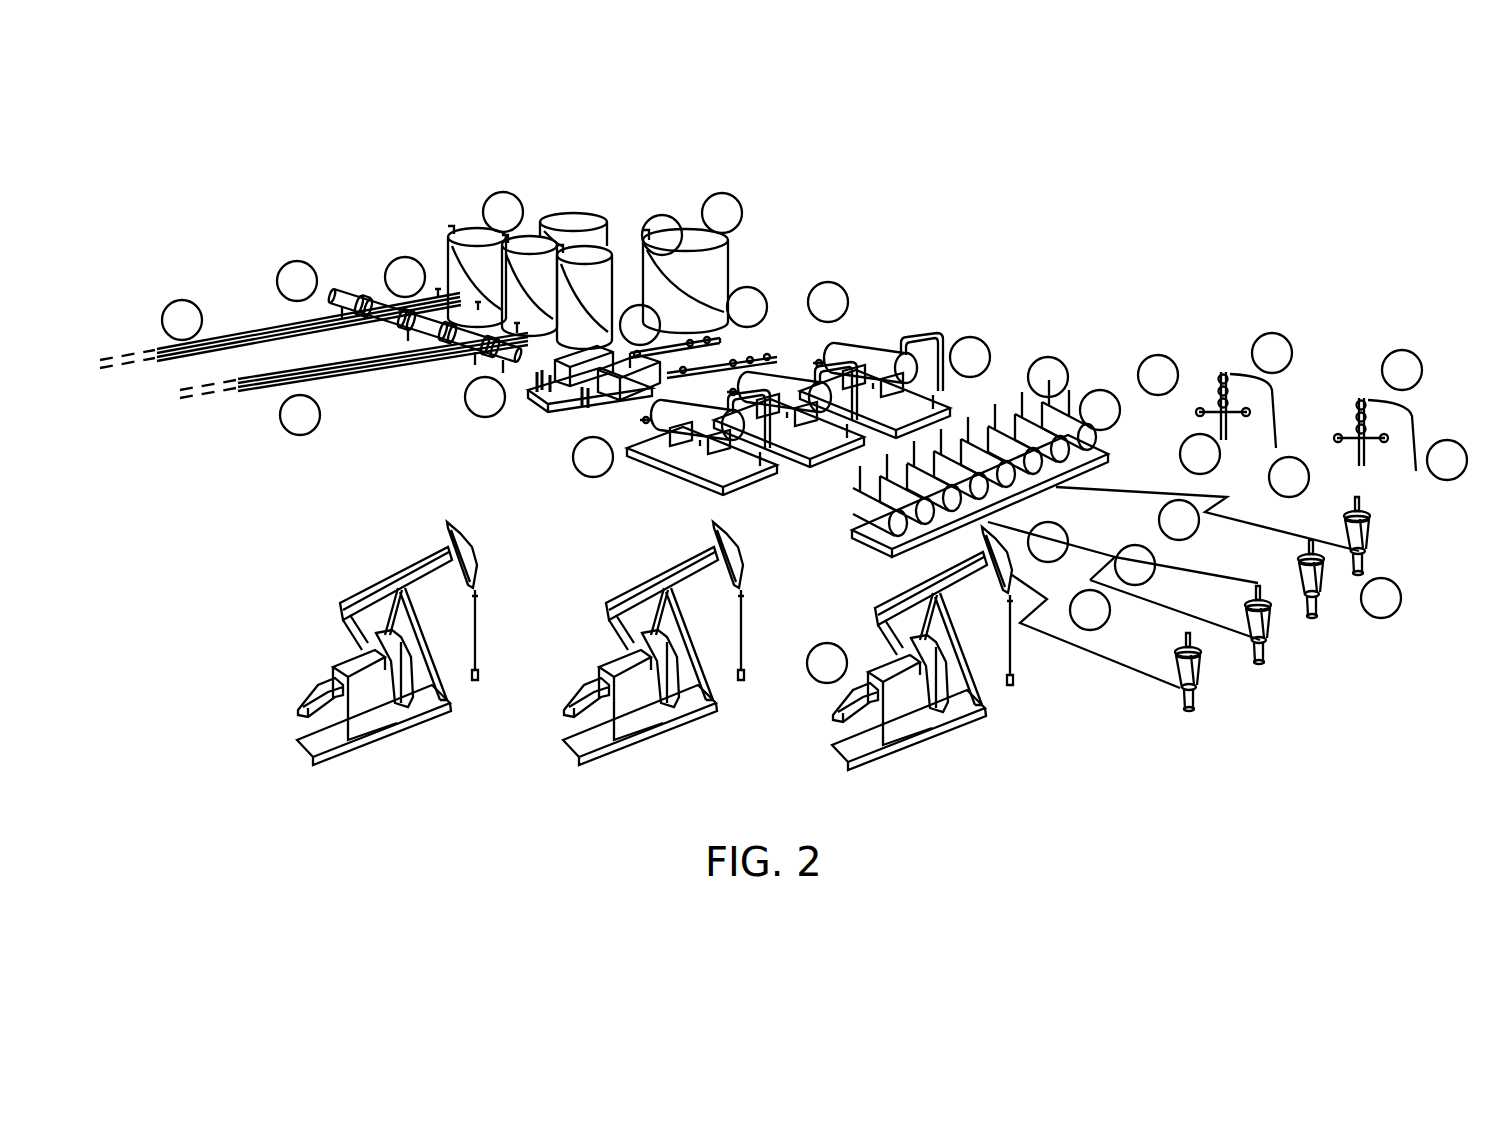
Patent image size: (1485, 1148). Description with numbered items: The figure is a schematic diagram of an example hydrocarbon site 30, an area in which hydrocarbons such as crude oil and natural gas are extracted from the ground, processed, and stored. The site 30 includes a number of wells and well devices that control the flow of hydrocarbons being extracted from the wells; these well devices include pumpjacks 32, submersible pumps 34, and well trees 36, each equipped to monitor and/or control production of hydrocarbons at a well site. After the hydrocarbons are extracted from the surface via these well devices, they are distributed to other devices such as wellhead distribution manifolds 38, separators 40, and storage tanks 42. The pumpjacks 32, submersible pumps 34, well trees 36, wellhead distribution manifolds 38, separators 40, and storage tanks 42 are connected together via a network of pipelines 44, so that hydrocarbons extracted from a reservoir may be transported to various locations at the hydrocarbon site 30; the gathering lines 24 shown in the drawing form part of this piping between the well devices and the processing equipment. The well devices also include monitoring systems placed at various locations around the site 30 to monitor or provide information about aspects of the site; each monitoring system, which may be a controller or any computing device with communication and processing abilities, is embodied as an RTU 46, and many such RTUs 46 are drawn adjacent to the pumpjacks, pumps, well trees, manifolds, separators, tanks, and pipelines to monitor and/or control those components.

The hydrocarbon site 30 is at (183, 174).
The pipeline 24 is at (372, 372).
The pumpjacks 32 is at (395, 570).
The submersible pumps 34 is at (1367, 551).
The well trees 36 is at (1221, 370).
The wellhead distribution manifolds 38 is at (868, 548).
The separators 40 is at (868, 340).
The storage tanks 42 is at (586, 210).
The network of pipelines 44 is at (263, 327).
The RTU 46 is at (793, 432).